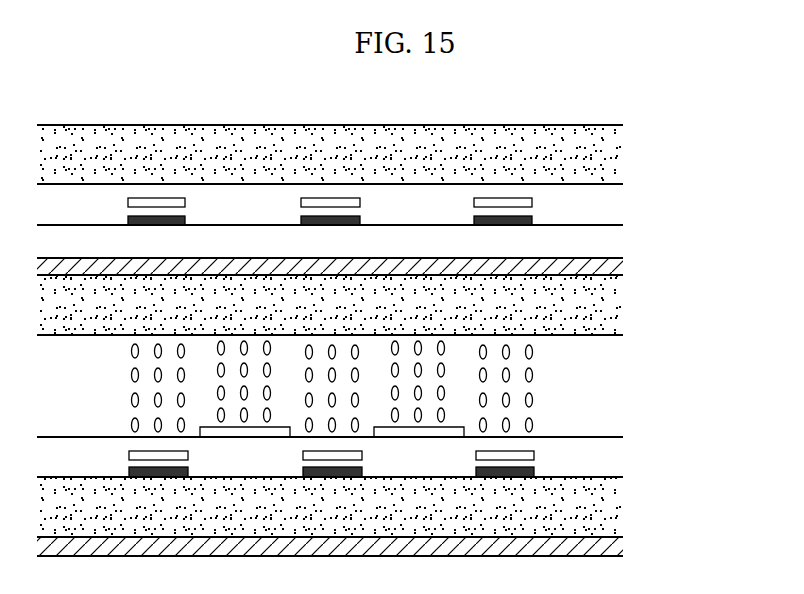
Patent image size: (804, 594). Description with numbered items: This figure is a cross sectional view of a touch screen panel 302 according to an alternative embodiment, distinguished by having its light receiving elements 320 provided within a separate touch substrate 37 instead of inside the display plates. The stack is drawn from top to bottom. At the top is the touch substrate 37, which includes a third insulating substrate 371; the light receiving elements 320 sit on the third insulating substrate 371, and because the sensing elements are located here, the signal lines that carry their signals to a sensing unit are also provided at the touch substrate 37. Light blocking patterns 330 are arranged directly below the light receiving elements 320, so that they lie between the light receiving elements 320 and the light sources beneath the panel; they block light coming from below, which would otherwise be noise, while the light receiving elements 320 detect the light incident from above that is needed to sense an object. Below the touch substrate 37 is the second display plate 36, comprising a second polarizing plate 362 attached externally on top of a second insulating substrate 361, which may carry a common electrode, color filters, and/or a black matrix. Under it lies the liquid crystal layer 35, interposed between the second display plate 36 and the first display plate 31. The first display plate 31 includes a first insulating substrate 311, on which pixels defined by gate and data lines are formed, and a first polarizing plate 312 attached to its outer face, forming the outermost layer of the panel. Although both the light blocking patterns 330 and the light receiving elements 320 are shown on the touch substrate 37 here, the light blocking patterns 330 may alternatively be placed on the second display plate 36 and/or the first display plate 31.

The touch screen panel 302 is at (407, 324).
The touch substrate 37 is at (383, 158).
The third insulating substrate 371 is at (605, 151).
The light receiving elements 320 is at (491, 203).
The light blocking patterns 330 is at (521, 222).
The second display plate 36 is at (383, 295).
The second polarizing plate 362 is at (617, 262).
The second insulating substrate 361 is at (616, 303).
The liquid crystal layer 35 is at (600, 401).
The first display plate 31 is at (384, 516).
The first insulating substrate 311 is at (616, 503).
The first polarizing plate 312 is at (617, 545).